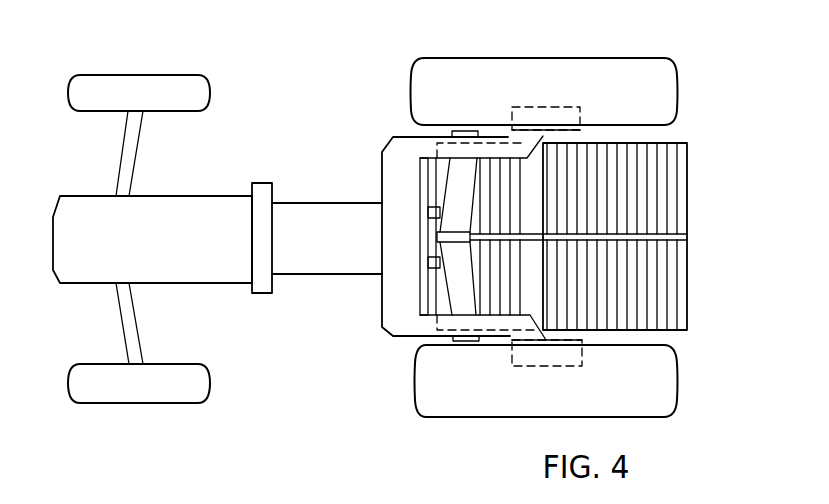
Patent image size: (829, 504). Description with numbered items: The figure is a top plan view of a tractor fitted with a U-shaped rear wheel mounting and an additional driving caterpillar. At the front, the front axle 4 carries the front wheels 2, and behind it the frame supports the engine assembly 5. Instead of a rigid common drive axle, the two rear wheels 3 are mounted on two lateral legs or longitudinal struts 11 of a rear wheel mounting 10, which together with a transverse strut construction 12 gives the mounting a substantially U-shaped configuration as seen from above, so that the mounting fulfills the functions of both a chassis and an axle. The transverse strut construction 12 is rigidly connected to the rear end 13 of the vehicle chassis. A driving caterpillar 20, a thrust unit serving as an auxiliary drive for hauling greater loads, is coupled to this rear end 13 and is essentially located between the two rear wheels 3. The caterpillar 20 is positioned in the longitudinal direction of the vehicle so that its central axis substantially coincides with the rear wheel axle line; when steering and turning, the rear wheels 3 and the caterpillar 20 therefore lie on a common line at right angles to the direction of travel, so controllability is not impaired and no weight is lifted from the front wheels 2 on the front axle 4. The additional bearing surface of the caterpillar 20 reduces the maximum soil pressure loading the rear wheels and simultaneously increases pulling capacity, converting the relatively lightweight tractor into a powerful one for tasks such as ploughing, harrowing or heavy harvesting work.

The front wheel 2 is at (98, 82).
The rear wheel 3 is at (446, 66).
The front axle 4 is at (128, 320).
The engine assembly 5 is at (193, 203).
The rear wheel mounting 10 is at (371, 141).
The longitudinal strut 11 is at (423, 147).
The transverse strut construction 12 is at (383, 172).
The rear end of the vehicle chassis 13 is at (420, 270).
The driving caterpillar 20 is at (696, 239).